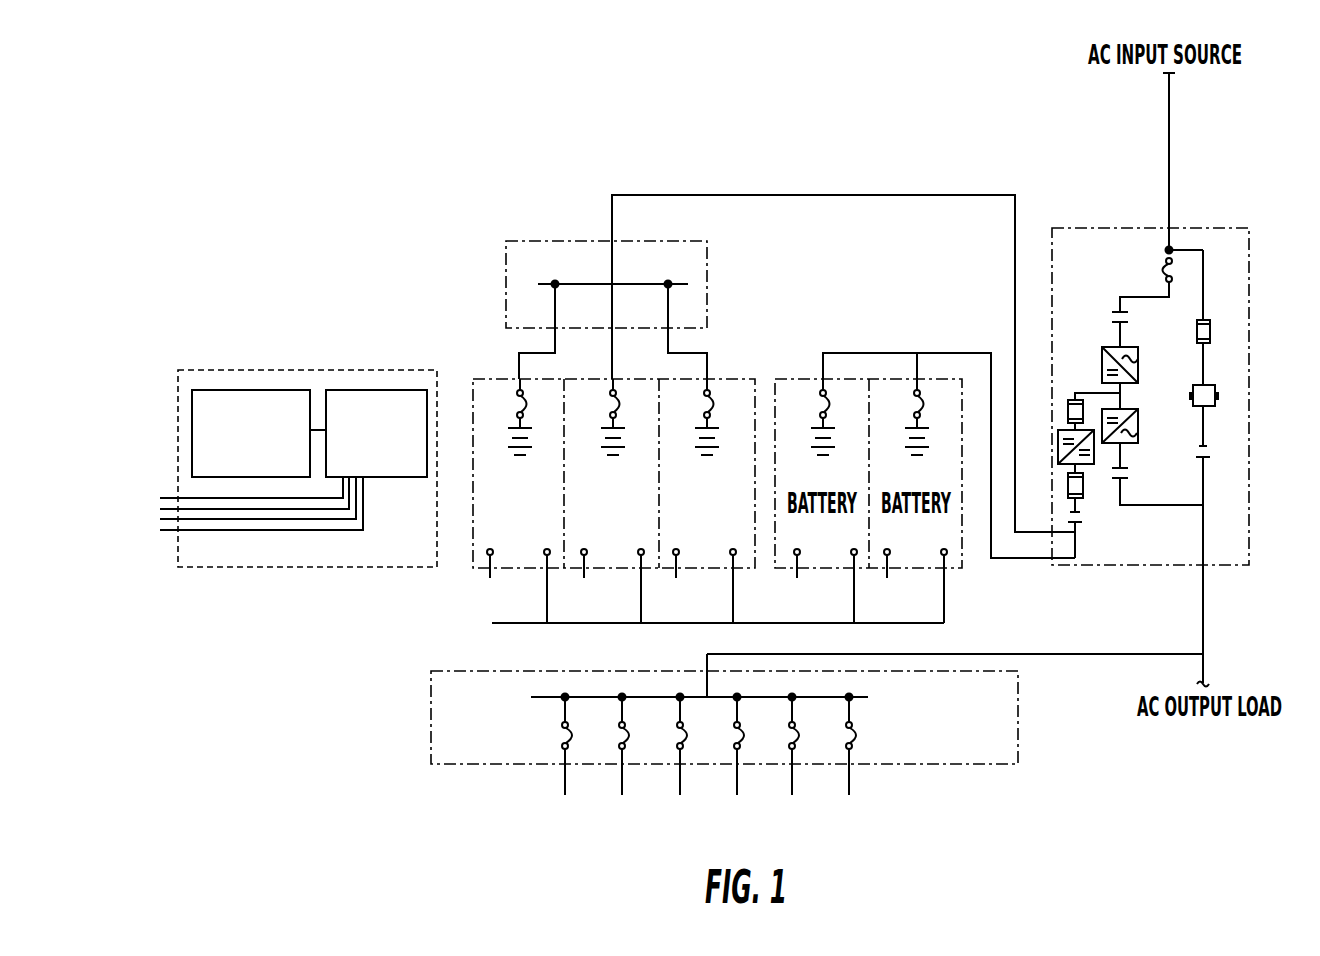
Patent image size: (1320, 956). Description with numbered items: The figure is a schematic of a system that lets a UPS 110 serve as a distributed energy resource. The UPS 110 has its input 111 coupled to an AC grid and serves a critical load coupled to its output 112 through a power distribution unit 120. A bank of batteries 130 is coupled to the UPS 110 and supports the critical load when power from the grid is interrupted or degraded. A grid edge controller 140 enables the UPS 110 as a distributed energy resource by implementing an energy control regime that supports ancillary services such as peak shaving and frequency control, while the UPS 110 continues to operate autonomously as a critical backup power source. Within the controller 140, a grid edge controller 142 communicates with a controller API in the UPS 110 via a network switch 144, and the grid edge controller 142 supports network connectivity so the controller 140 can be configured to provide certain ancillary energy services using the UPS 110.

The UPS 110 is at (1250, 348).
The input 111 is at (1198, 211).
The output 112 is at (1216, 569).
The power distribution unit 120 is at (1018, 727).
The bank of batteries 130 is at (728, 379).
The grid edge controller 140 is at (315, 370).
The grid edge controller 142 is at (250, 390).
The network switch 144 is at (398, 390).